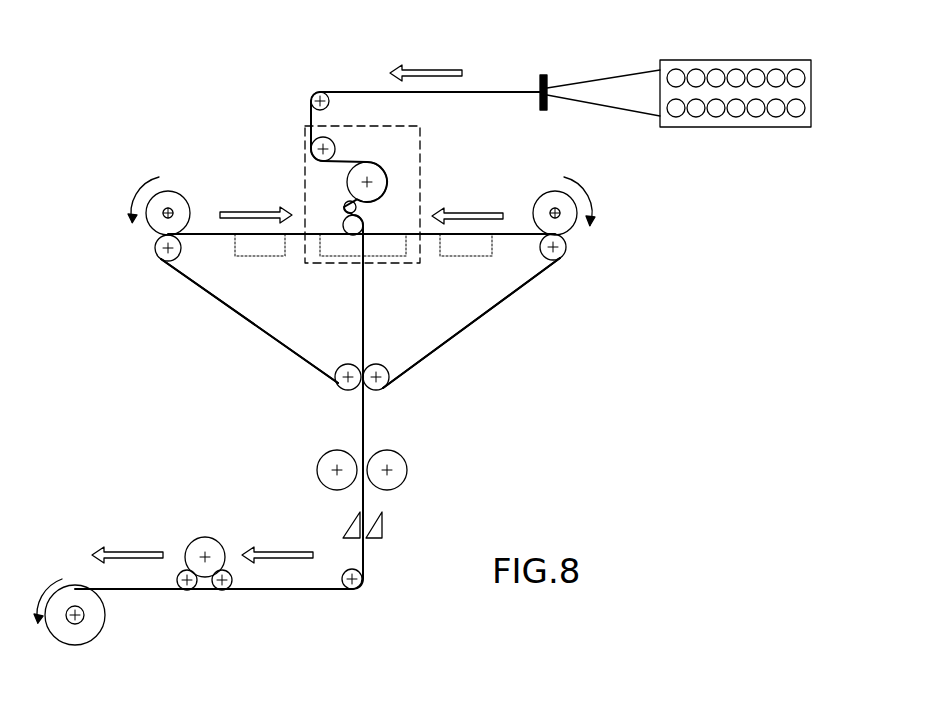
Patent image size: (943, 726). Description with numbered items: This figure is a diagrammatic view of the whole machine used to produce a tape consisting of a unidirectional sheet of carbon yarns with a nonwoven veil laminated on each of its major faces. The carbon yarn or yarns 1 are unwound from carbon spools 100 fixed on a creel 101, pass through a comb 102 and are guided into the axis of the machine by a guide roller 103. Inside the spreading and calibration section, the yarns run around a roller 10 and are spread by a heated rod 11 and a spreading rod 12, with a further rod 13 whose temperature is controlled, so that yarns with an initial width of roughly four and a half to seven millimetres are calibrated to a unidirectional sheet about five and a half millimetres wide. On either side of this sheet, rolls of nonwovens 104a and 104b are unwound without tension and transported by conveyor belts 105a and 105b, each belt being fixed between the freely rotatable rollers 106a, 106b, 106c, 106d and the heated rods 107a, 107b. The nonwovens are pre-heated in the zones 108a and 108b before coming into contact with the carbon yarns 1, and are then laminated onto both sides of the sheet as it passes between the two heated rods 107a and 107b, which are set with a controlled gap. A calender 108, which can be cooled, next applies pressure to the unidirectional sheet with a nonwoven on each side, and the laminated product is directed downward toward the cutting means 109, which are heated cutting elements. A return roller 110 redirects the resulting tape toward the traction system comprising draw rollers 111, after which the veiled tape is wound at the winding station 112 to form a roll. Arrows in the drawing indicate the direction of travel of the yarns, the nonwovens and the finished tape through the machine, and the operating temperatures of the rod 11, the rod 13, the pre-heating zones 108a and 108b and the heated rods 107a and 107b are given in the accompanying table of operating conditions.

The carbon yarn 1 is at (458, 95).
The roller 10 is at (311, 158).
The heated rod 11 is at (379, 175).
The spreading rod 12 is at (345, 204).
The rod 13 is at (344, 221).
The carbon spools 100 is at (696, 99).
The creel 101 is at (735, 128).
The comb 102 is at (552, 70).
The guide roller 103 is at (314, 94).
The roll of nonwoven 104a is at (188, 197).
The roll of nonwoven 104b is at (545, 195).
The conveyor belt 105a is at (240, 318).
The conveyor belt 105b is at (484, 318).
The freely rotatable roller 106a is at (160, 254).
The freely rotatable roller 106b is at (343, 389).
The freely rotatable roller 106c is at (565, 253).
The freely rotatable roller 106d is at (383, 389).
The heated rod 107a is at (386, 235).
The heated rod 107b is at (342, 235).
The calender 108 is at (300, 458).
The pre-heating zone 108a is at (252, 252).
The pre-heating zone 108b is at (470, 256).
The cutting means 109 is at (390, 520).
The return roller 110 is at (362, 589).
The draw rollers 111 is at (195, 535).
The winding 112 is at (106, 621).